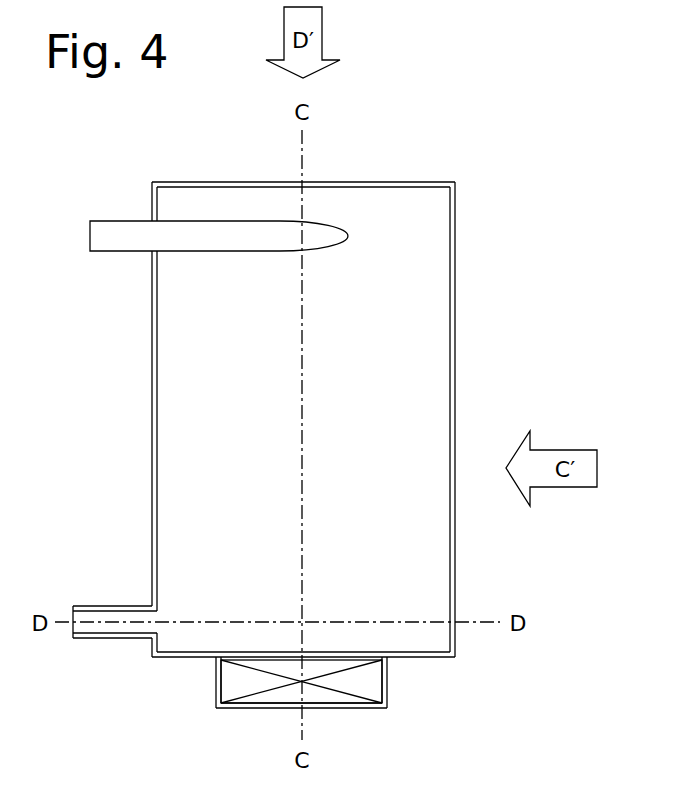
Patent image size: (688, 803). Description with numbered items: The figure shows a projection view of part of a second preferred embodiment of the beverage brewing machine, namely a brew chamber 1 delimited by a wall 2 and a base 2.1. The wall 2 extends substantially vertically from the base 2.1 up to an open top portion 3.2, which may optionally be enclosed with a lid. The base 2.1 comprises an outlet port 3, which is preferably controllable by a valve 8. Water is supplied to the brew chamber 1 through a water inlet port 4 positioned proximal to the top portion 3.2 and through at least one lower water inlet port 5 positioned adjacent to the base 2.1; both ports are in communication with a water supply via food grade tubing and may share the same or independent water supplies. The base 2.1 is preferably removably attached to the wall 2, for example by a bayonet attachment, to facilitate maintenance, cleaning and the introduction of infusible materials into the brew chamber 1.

The brew chamber 1 is at (518, 198).
The wall 2 is at (455, 362).
The base 2.1 is at (420, 658).
The outlet port 3 is at (224, 657).
The top portion 3.2 is at (350, 182).
The water inlet port 4 is at (130, 220).
The lower water inlet port 5 is at (126, 606).
The valve 8 is at (243, 683).